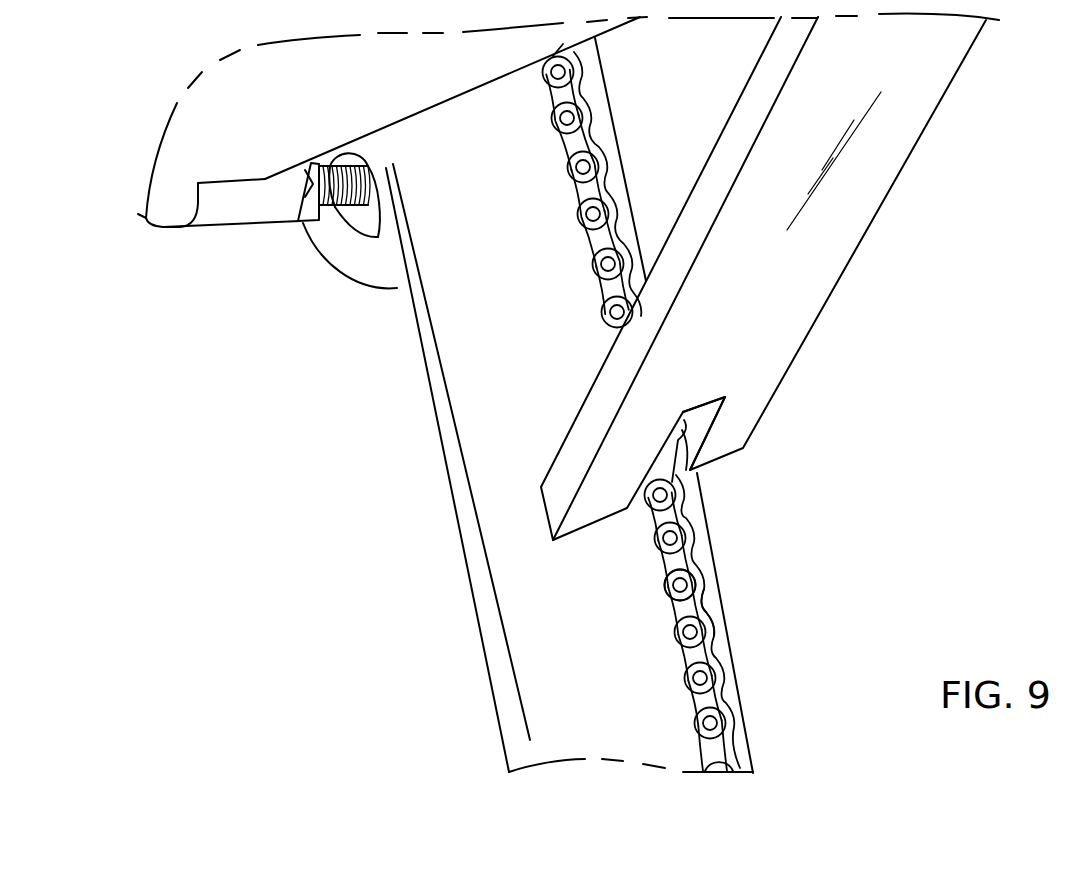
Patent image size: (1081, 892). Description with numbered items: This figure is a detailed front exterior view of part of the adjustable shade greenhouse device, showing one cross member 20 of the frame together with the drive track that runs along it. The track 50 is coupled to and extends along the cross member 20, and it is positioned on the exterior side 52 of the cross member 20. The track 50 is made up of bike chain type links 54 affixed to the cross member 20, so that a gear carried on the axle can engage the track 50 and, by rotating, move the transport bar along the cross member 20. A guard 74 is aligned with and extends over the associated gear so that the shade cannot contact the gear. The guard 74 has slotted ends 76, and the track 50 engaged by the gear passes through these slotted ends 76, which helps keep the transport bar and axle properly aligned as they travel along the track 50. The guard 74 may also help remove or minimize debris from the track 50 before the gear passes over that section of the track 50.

The cross member 20 is at (482, 453).
The track 50 is at (737, 597).
The exterior side 52 is at (635, 590).
The bike chain type links 54 is at (714, 640).
The guard 74 is at (872, 212).
The slotted ends 76 is at (712, 461).